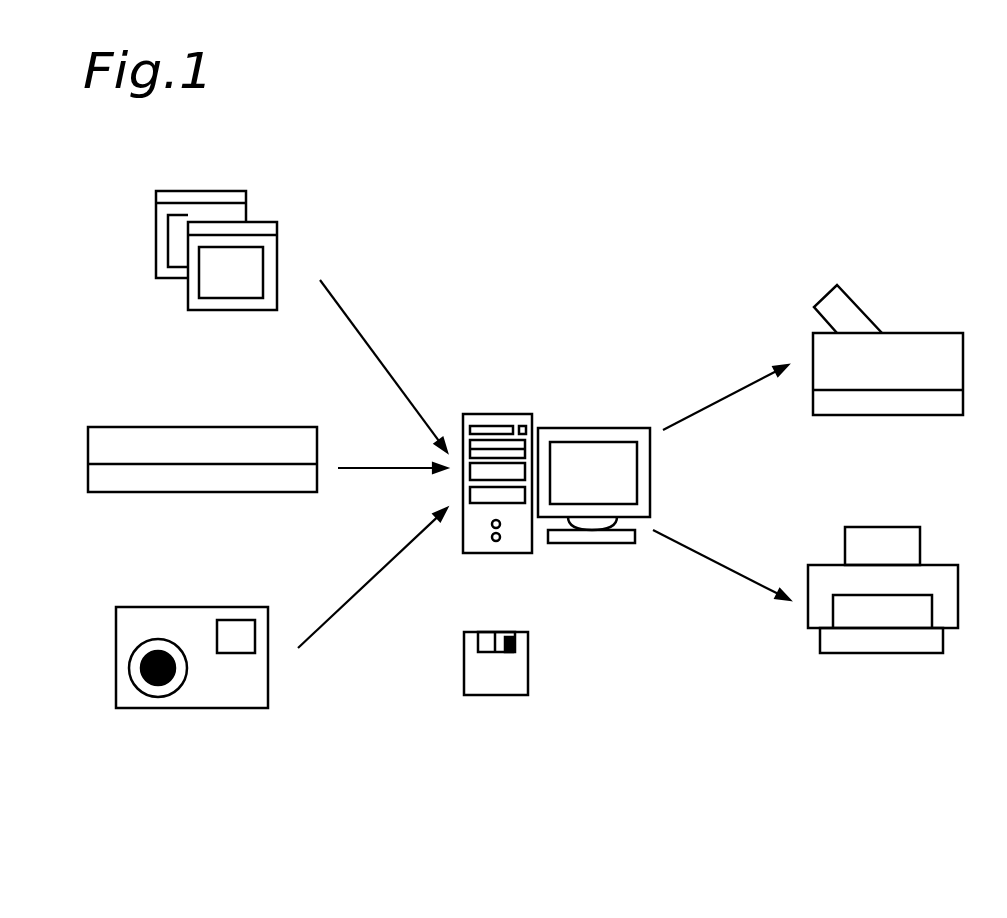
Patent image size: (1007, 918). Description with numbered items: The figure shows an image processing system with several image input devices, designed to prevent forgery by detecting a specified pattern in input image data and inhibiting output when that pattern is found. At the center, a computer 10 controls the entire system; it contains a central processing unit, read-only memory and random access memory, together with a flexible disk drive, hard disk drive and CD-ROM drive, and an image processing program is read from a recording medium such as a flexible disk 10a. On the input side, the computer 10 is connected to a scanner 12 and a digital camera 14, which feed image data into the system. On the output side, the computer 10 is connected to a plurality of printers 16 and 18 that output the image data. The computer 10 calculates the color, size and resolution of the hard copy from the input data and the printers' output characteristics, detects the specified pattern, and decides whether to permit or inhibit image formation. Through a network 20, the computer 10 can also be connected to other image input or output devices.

The computer 10 is at (470, 552).
The flexible disk 10a is at (528, 673).
The scanner 12 is at (115, 492).
The digital camera 14 is at (133, 708).
The printer 16 is at (825, 415).
The printer 18 is at (833, 653).
The network 20 is at (338, 304).